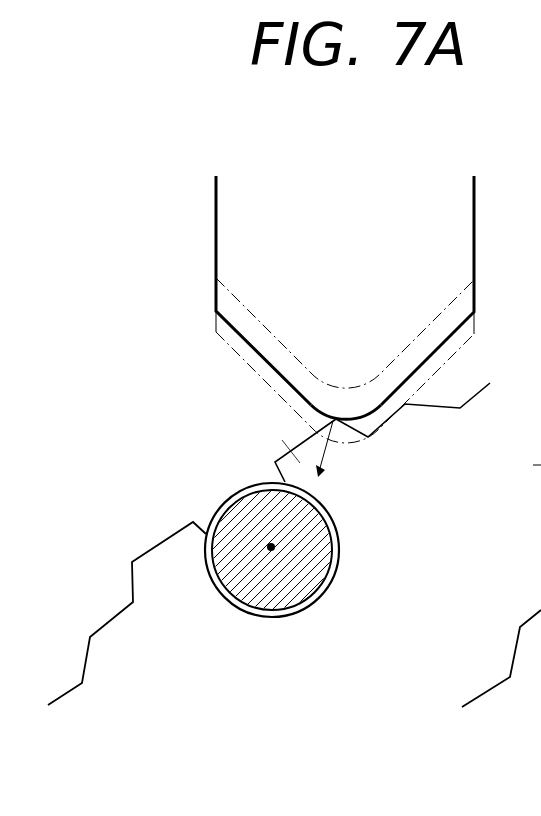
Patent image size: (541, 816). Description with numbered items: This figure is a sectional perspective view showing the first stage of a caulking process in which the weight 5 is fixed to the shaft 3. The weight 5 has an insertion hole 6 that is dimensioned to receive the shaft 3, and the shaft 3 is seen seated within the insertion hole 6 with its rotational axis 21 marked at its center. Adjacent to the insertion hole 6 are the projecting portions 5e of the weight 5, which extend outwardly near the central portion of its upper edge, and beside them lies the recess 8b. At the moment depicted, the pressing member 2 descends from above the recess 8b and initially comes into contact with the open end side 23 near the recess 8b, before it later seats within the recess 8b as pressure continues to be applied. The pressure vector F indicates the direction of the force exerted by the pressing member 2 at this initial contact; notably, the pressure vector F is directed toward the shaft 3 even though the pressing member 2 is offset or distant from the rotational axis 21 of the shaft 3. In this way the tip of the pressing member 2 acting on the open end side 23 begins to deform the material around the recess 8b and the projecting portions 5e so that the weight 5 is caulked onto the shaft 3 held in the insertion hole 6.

The pressing member 2 is at (457, 248).
The open end side 23 is at (342, 418).
The projecting portion 5e is at (282, 449).
The recess 8b is at (368, 428).
The pressure vector F is at (332, 454).
The insertion hole 6 is at (339, 562).
The shaft 3 is at (255, 587).
The rotational axis 21 is at (268, 545).
The weight 5 is at (122, 647).